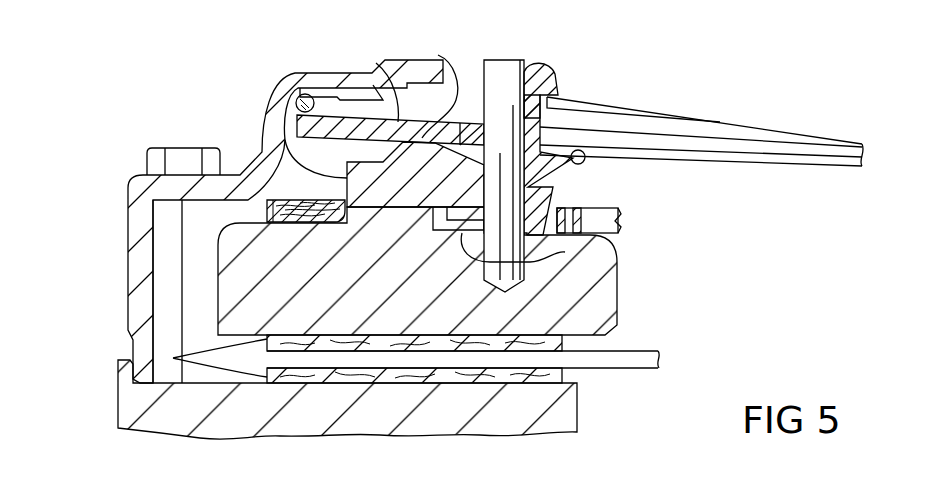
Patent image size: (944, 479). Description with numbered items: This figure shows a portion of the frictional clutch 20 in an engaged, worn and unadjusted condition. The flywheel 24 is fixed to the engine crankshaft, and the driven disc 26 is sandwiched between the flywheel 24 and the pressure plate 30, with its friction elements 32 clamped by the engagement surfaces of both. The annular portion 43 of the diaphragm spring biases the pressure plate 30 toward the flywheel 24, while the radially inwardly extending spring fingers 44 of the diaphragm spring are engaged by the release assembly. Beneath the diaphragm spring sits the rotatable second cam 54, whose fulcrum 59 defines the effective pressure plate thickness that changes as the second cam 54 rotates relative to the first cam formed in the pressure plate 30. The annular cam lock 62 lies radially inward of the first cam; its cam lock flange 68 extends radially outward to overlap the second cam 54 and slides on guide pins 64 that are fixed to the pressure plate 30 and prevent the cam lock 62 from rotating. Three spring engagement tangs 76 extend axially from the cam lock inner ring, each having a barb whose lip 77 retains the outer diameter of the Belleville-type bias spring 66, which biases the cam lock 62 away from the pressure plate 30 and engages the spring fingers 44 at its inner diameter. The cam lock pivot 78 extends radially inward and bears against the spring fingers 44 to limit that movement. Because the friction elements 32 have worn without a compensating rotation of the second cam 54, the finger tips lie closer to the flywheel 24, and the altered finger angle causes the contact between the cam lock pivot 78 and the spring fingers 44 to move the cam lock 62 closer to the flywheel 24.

The frictional clutch 20 is at (103, 150).
The flywheel 24 is at (118, 401).
The driven disc 26 is at (645, 351).
The pressure plate 30 is at (618, 290).
The friction elements 32 is at (173, 358).
The annular portion 43 is at (378, 66).
The spring fingers 44 is at (712, 162).
The second cam 54 is at (263, 120).
The fulcrum 59 is at (447, 118).
The cam lock 62 is at (555, 184).
The guide pins 64 is at (517, 60).
The bias spring 66 is at (693, 118).
The cam lock flange 68 is at (565, 252).
The spring engagement tangs 76 is at (535, 68).
The lip 77 is at (567, 101).
The cam lock pivot 78 is at (586, 158).